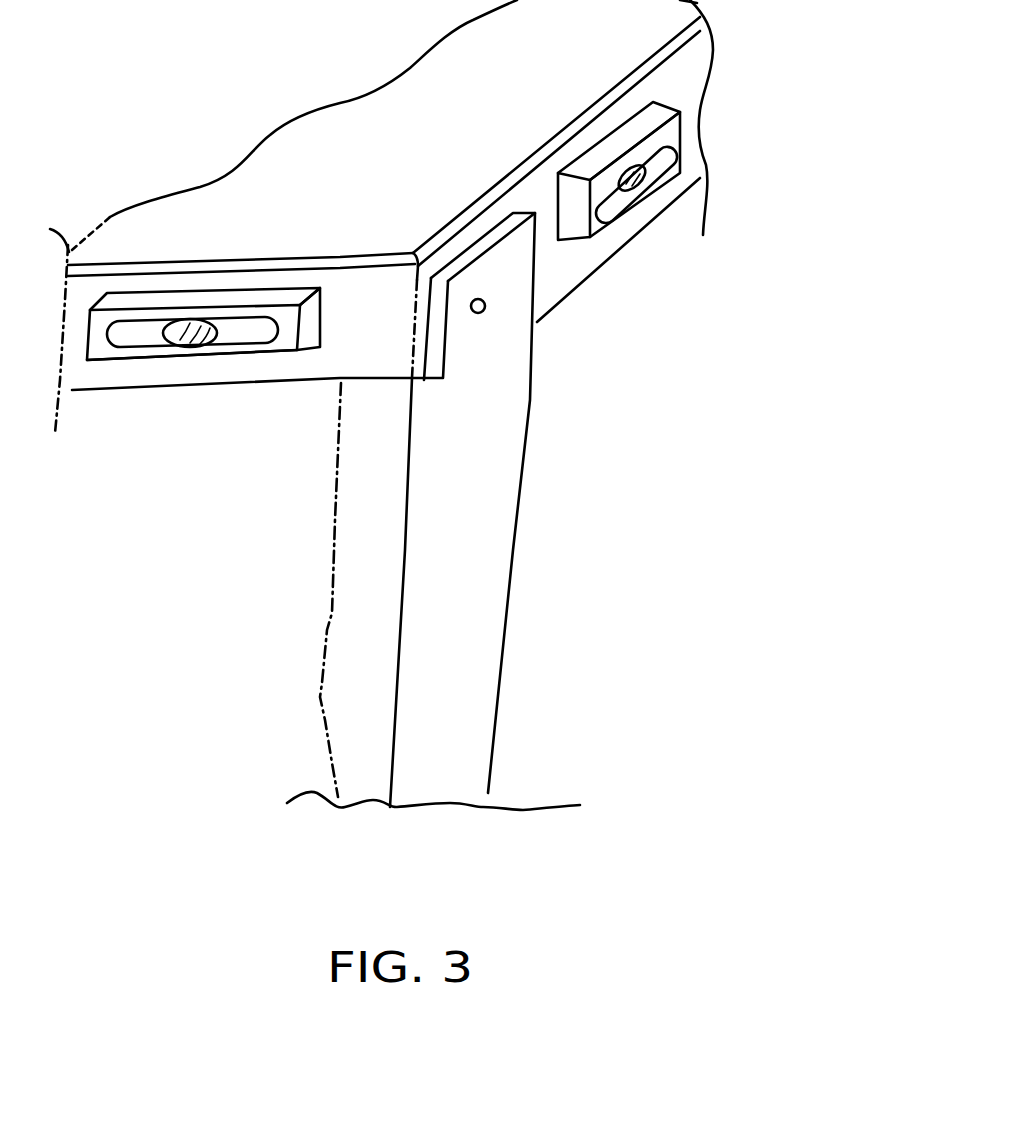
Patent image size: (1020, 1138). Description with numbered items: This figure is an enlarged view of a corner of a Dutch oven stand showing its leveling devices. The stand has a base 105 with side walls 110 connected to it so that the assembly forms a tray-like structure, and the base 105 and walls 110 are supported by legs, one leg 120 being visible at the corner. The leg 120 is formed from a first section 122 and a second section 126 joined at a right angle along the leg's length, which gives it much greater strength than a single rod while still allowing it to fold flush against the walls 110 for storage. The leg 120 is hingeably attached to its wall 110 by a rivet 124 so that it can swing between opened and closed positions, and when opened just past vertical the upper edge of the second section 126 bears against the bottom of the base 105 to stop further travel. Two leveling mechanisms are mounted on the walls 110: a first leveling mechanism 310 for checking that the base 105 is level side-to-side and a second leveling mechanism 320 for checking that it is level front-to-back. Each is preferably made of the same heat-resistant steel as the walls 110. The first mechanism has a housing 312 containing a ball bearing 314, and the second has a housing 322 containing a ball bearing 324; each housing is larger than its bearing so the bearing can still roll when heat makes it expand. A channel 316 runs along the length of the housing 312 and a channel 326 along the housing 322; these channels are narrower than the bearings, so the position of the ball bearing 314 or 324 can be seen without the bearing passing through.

The base 105 is at (381, 216).
The side wall 110 is at (380, 283).
The leg 120 is at (441, 511).
The first section 122 is at (488, 560).
The rivet 124 is at (490, 306).
The second section 126 is at (340, 633).
The first leveling mechanism 310 is at (210, 368).
The housing 312 is at (300, 295).
The ball bearing 314 is at (197, 318).
The channel 316 is at (160, 393).
The second leveling mechanism 320 is at (711, 132).
The housing 322 is at (657, 113).
The ball bearing 324 is at (633, 180).
The channel 326 is at (636, 291).